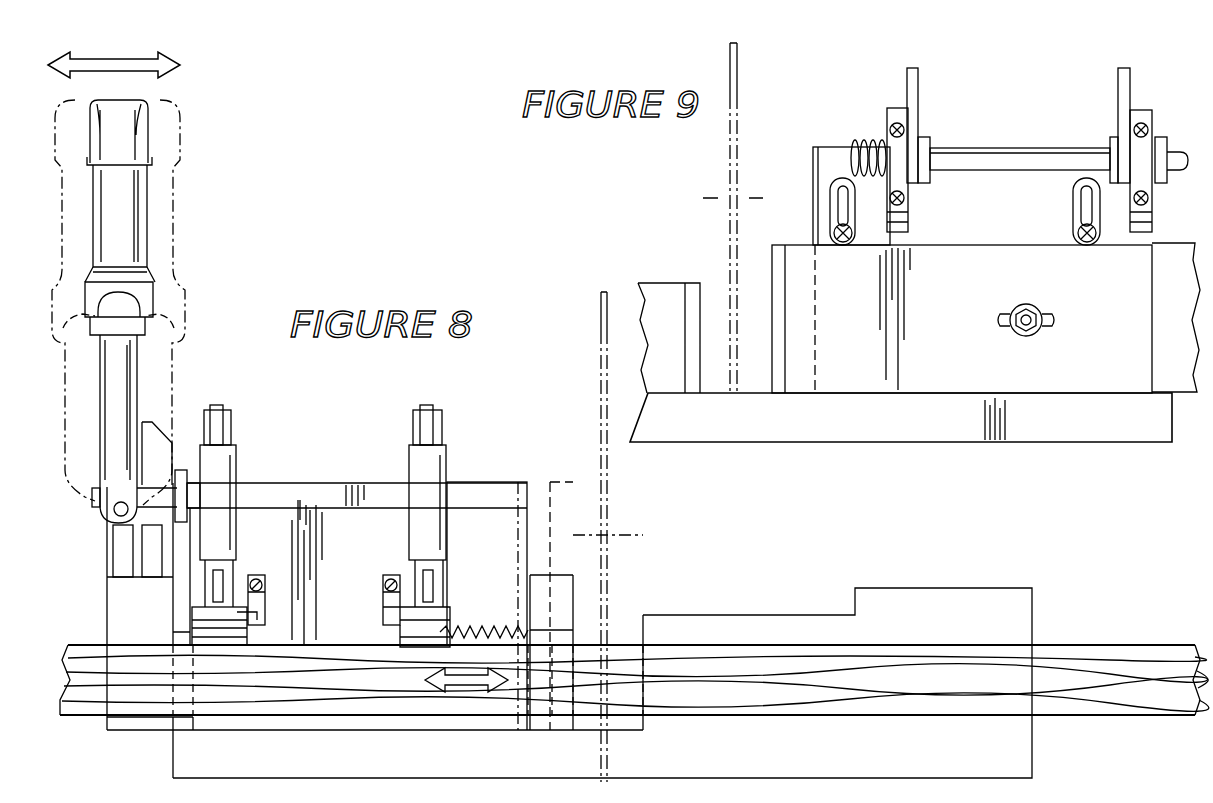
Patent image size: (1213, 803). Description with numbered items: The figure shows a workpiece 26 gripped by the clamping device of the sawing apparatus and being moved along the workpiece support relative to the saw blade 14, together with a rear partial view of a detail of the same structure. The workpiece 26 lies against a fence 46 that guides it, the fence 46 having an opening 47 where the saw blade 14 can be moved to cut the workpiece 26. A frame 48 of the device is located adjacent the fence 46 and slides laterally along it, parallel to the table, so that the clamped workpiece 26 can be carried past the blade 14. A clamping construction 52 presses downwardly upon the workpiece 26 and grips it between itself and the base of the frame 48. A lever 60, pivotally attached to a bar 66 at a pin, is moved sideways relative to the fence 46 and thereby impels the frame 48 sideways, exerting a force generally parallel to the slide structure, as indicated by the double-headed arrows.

In FIG. 8, the saw blade 14 is at (598, 298).
In FIG. 9, the saw blade 14 is at (728, 125).
In FIG. 8, the workpiece 26 is at (1103, 697).
In FIG. 8, the fence 46 is at (1013, 620).
In FIG. 9, the opening 47 is at (700, 315).
In FIG. 8, the frame 48 is at (508, 481).
In FIG. 9, the frame 48 is at (810, 152).
In FIG. 8, the clamping construction 52 is at (188, 594).
In FIG. 8, the lever 60 is at (143, 233).
In FIG. 8, the bar 66 is at (92, 500).
In FIG. 9, the bar 66 is at (1184, 152).